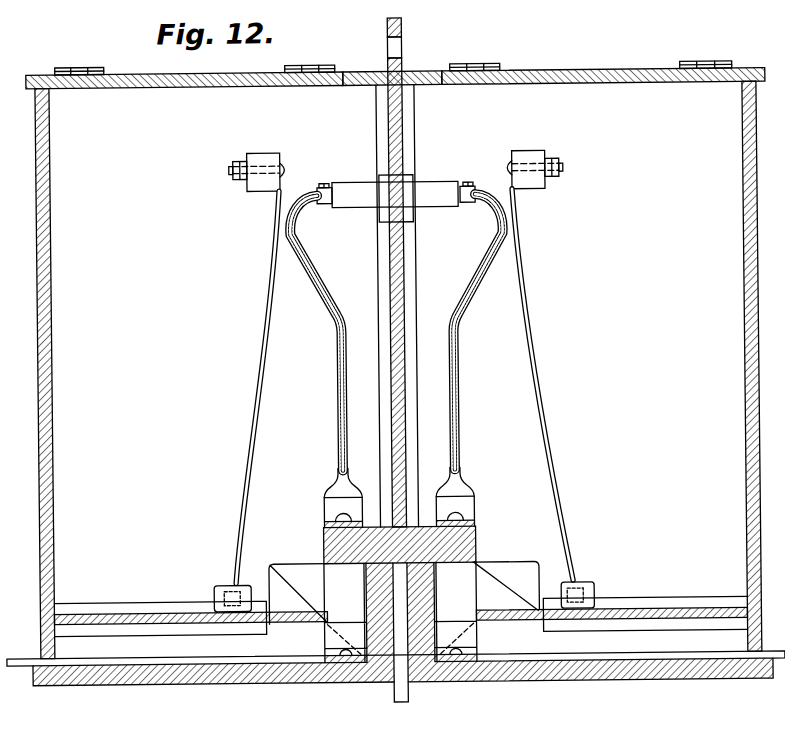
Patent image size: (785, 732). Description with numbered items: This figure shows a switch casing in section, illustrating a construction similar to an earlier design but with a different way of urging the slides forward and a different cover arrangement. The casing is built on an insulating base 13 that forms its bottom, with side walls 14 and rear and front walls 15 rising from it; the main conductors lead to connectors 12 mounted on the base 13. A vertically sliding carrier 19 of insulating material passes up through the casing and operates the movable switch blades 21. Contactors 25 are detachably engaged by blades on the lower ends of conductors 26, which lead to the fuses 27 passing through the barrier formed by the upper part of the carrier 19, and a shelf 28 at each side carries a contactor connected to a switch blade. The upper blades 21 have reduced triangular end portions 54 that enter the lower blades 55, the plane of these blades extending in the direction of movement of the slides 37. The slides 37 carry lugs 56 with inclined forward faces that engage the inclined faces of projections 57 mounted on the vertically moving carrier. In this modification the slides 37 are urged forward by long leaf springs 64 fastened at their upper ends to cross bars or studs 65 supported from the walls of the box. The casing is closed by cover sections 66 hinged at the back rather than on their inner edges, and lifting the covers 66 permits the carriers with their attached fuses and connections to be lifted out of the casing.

The connector 12 is at (584, 652).
The insulating base 13 is at (537, 668).
The side wall 14 is at (746, 334).
The rear and front wall 15 is at (614, 264).
The carrier 19 is at (406, 134).
The switch blade 21 is at (458, 611).
The contactor 25 is at (462, 511).
The conductor 26 is at (460, 433).
The fuse 27 is at (434, 198).
The shelf 28 is at (474, 549).
The slide 37 is at (616, 610).
The reduced triangular end portion 54 is at (410, 660).
The lower blade 55 is at (444, 640).
The lug 56 is at (624, 607).
The projection 57 is at (506, 586).
The leaf spring 64 is at (540, 438).
The cross bar or stud 65 is at (535, 184).
The cover section 66 is at (635, 86).